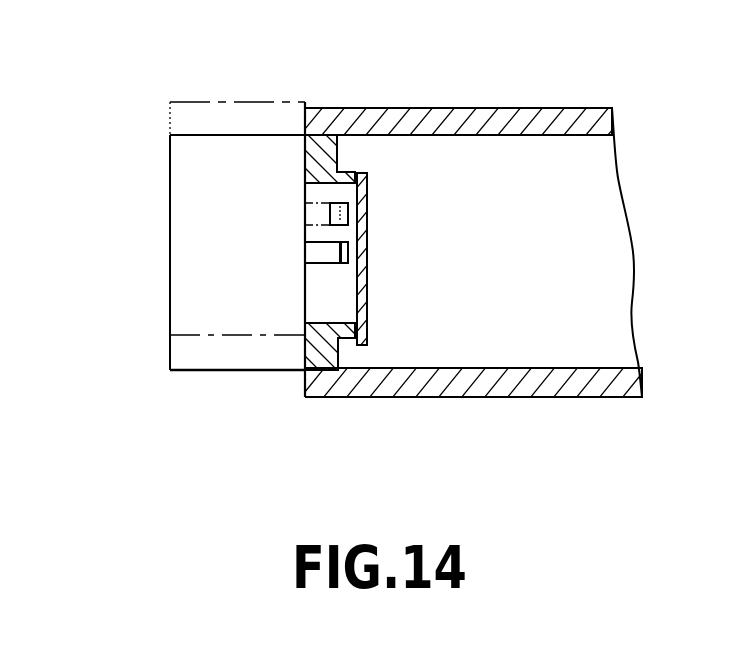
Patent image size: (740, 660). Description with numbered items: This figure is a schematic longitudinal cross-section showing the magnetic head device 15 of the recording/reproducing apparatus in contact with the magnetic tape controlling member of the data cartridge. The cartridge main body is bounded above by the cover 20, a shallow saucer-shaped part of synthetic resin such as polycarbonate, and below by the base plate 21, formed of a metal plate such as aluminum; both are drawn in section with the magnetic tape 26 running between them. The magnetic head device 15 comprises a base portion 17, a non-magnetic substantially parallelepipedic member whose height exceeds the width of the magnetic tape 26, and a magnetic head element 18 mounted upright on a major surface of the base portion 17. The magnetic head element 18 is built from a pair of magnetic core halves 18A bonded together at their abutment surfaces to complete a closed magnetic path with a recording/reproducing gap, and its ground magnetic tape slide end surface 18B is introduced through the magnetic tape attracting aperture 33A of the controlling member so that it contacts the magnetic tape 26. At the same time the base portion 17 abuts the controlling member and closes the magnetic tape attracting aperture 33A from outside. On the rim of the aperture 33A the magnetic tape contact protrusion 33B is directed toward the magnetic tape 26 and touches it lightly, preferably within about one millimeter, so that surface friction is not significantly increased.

The magnetic head device 15 is at (162, 137).
The base portion 17 is at (187, 227).
The magnetic head element 18 is at (470, 207).
The magnetic core half 18A is at (318, 255).
The magnetic tape slide end surface 18B is at (348, 250).
The cover 20 is at (557, 108).
The base plate 21 is at (503, 397).
The magnetic tape 26 is at (368, 183).
The magnetic tape attracting aperture 33A is at (316, 183).
The magnetic tape contact protrusion 33B is at (352, 173).